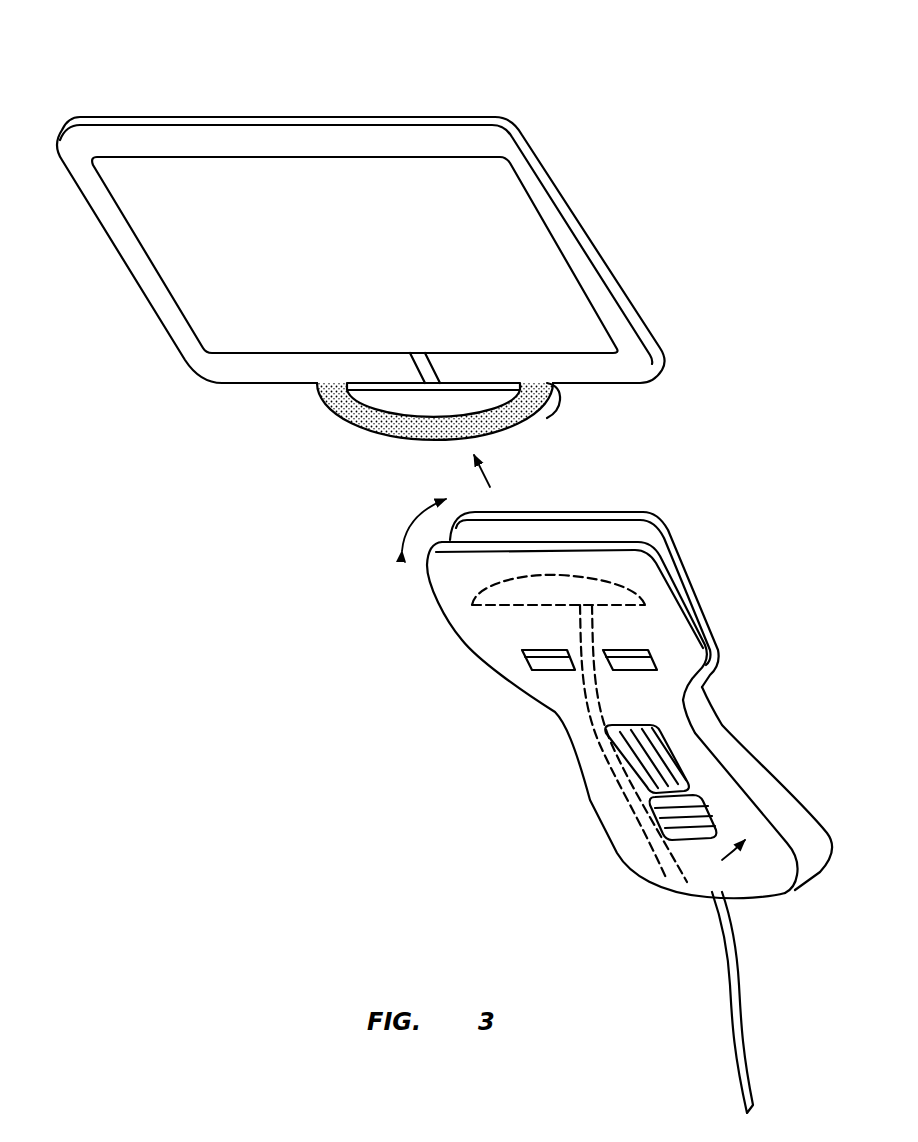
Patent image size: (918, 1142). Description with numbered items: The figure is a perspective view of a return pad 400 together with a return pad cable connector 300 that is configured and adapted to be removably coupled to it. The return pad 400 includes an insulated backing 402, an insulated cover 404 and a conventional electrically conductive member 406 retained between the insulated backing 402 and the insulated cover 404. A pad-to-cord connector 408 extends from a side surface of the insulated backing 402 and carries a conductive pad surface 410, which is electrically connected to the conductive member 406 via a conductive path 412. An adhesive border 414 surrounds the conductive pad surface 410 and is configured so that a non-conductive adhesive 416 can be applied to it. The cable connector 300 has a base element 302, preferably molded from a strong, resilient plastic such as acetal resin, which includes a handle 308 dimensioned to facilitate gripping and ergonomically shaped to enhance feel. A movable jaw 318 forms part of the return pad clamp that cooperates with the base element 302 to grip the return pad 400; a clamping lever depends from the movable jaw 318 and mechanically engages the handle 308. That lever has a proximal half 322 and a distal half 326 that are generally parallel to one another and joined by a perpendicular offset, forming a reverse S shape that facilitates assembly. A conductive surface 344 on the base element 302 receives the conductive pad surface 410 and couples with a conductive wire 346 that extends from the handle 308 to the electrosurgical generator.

The return pad 400 is at (413, 92).
The insulated backing 402 is at (617, 383).
The insulated cover 404 is at (580, 263).
The electrically conductive member 406 is at (504, 220).
The pad-to-cord connector 408 is at (324, 425).
The conductive pad surface 410 is at (403, 407).
The conductive path 412 is at (427, 360).
The adhesive border 414 is at (533, 422).
The non-conductive adhesive 416 is at (502, 441).
The cable connector 300 is at (727, 498).
The base element 302 is at (784, 763).
The handle 308 is at (803, 833).
The movable jaw 318 is at (687, 578).
The proximal half 322 is at (657, 752).
The distal half 326 is at (683, 815).
The conductive surface 344 is at (507, 590).
The conductive wire 346 is at (730, 950).